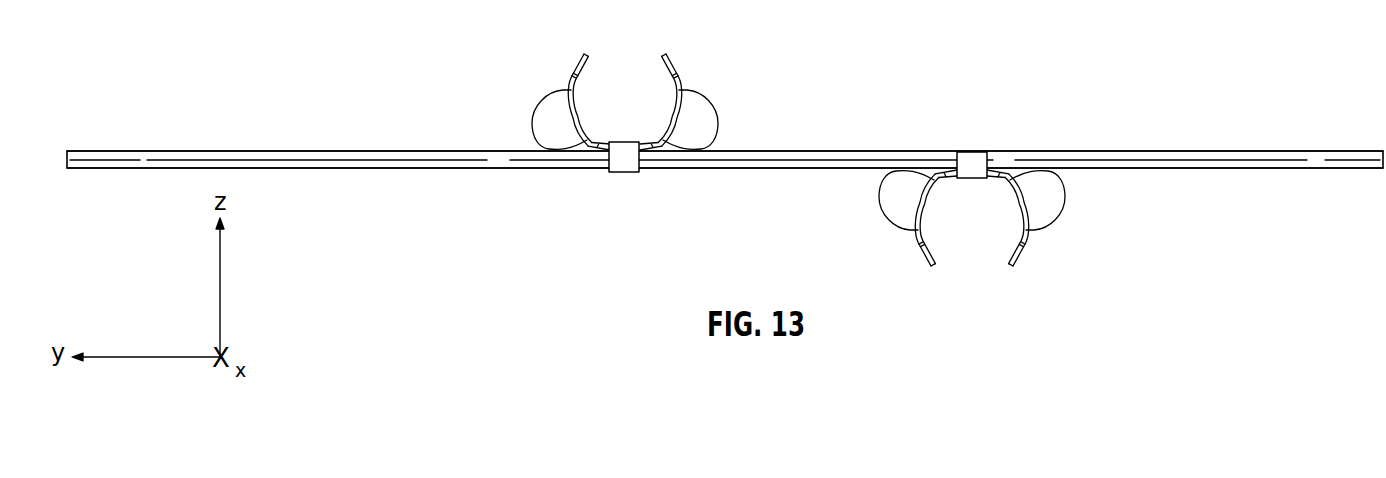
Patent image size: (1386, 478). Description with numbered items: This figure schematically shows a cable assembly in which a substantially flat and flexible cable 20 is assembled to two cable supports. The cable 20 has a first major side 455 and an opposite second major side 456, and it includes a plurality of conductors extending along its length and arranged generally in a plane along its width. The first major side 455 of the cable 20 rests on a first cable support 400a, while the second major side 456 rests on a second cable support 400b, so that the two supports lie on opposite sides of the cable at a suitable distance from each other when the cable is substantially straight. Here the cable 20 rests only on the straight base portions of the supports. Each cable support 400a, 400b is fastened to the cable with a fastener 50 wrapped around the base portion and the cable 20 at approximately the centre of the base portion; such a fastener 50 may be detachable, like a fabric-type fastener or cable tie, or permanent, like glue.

The substantially flat and flexible cable 20 is at (365, 150).
The fastener 50 is at (621, 162).
The first cable support 400a is at (576, 60).
The second cable support 400b is at (1022, 254).
The first major side 455 is at (1120, 151).
The second major side 456 is at (1148, 168).